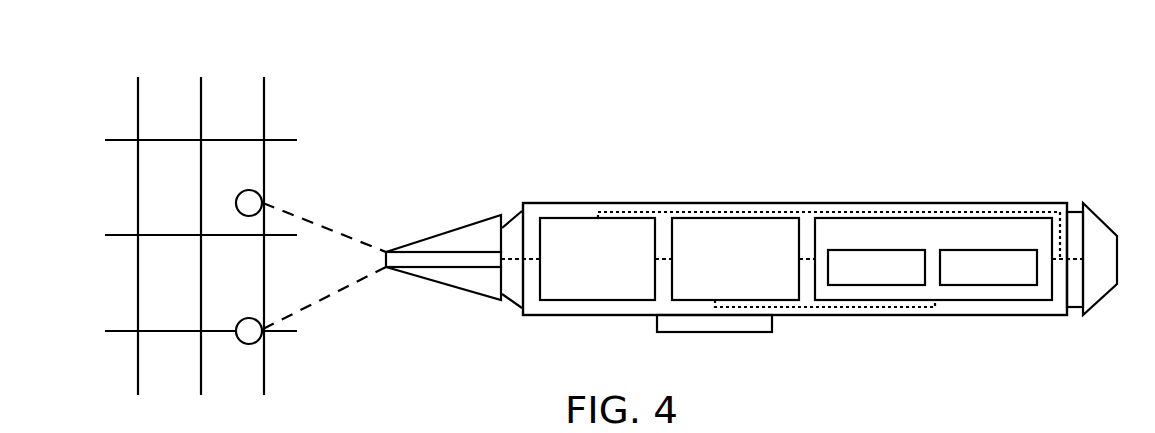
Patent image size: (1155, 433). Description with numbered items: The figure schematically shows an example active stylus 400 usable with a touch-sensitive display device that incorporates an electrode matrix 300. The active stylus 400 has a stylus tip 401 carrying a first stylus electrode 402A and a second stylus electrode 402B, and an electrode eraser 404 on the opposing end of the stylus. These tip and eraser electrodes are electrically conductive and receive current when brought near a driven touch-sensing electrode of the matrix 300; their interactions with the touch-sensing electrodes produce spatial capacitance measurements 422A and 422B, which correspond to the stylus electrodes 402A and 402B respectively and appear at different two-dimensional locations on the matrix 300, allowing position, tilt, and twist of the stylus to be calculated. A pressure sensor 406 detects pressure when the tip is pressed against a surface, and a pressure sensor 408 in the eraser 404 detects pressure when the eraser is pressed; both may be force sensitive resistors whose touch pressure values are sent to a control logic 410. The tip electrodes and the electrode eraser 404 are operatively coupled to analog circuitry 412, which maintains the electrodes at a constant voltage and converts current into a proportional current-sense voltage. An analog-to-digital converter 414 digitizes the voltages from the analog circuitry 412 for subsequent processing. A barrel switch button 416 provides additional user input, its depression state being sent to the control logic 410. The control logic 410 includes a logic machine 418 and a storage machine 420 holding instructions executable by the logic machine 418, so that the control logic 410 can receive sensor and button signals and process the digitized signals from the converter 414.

The matrix 300 is at (172, 78).
The spatial capacitance measurement 422A is at (252, 190).
The spatial capacitance measurement 422B is at (252, 318).
The active stylus 400 is at (1019, 114).
The stylus tip 401 is at (454, 225).
The first stylus electrode 402A is at (461, 228).
The second stylus electrode 402B is at (452, 290).
The pressure sensor 406 is at (515, 212).
The control logic 410 is at (933, 259).
The analog circuitry 412 is at (597, 259).
The analog-to-digital (A/D) converter 414 is at (735, 259).
The barrel switch button 416 is at (683, 333).
The logic machine 418 is at (876, 267).
The storage machine 420 is at (988, 267).
The pressure sensor 408 is at (1077, 210).
The electrode eraser 404 is at (1102, 226).